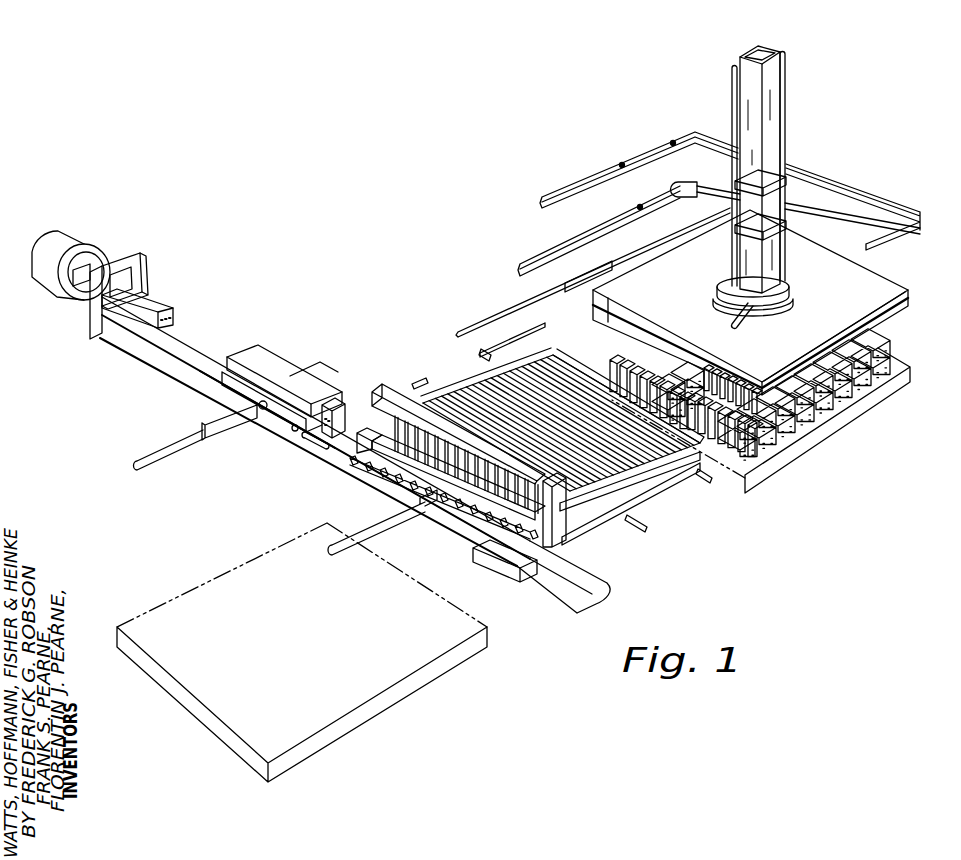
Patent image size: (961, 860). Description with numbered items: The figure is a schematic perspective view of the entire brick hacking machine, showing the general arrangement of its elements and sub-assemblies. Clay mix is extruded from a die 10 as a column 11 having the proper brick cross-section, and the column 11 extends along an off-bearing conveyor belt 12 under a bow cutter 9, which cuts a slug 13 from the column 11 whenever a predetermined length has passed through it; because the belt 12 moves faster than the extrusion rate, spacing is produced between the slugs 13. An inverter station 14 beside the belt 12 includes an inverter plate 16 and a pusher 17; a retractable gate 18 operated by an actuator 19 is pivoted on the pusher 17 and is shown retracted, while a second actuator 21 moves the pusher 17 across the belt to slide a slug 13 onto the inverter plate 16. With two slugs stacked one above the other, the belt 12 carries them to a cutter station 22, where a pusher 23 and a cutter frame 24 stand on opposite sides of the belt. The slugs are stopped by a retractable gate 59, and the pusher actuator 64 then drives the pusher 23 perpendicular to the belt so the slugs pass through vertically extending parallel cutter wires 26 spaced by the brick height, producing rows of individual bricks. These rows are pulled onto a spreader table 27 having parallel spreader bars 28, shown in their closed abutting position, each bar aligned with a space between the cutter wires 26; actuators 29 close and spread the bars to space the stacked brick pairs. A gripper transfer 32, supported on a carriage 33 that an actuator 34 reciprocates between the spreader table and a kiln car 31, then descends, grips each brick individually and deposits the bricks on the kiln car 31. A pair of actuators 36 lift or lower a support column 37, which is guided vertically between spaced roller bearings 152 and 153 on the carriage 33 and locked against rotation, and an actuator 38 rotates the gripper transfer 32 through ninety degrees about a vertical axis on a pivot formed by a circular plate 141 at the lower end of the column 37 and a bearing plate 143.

The bow cutter 9 is at (84, 308).
The die 10 is at (68, 238).
The column 11 is at (152, 303).
The off-bearing conveyor belt 12 is at (197, 337).
The slug 13 is at (341, 403).
The inverter station 14 is at (313, 375).
The inverter plate 16 is at (260, 360).
The pusher 17 is at (240, 390).
The retractable gate 18 is at (313, 453).
The actuator 19 is at (275, 430).
The second actuator 21 is at (160, 440).
The cutter station 22 is at (437, 524).
The pusher 23 is at (393, 483).
The cutter frame 24 is at (403, 412).
The cutter wires 26 is at (433, 446).
The spreader table 27 is at (623, 480).
The spreader bars 28 is at (583, 407).
The actuators 29 is at (418, 384).
The kiln car 31 is at (428, 677).
The gripper transfer 32 is at (890, 285).
The carriage 33 is at (813, 183).
The actuator 34 is at (510, 302).
The actuators 36 is at (735, 102).
The support column 37 is at (770, 88).
The actuator 38 is at (750, 312).
The retractable gate 59 is at (512, 567).
The pusher actuator 64 is at (370, 540).
The circular plate 141 is at (789, 284).
The bearing plate 143 is at (730, 303).
The roller bearing 152 is at (778, 173).
The roller bearing 153 is at (773, 230).